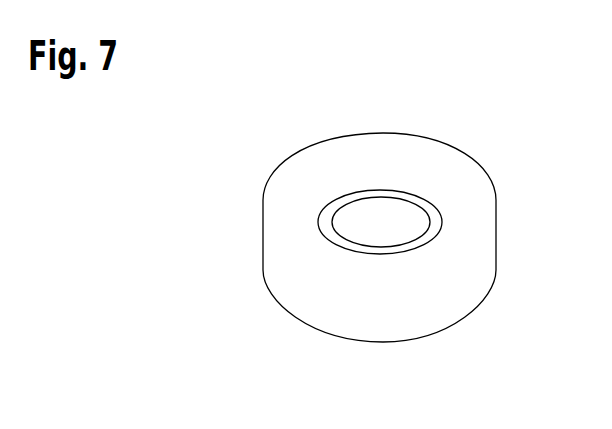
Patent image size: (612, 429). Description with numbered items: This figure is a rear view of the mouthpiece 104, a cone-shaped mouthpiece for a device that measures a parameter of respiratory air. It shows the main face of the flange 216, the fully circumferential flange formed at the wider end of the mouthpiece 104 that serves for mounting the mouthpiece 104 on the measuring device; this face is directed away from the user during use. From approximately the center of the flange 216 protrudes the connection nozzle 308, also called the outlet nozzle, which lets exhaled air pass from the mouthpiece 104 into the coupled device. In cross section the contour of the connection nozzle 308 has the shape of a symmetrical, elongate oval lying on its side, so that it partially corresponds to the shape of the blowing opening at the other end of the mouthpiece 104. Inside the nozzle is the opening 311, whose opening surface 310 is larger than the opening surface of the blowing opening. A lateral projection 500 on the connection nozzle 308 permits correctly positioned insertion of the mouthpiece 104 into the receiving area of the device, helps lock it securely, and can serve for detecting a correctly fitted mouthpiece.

The mouthpiece 104 is at (228, 193).
The flange 216 is at (464, 272).
The outlet nozzle 308 is at (452, 210).
The opening surface 310 is at (370, 230).
The opening 311 is at (398, 220).
The projection 500 is at (323, 240).